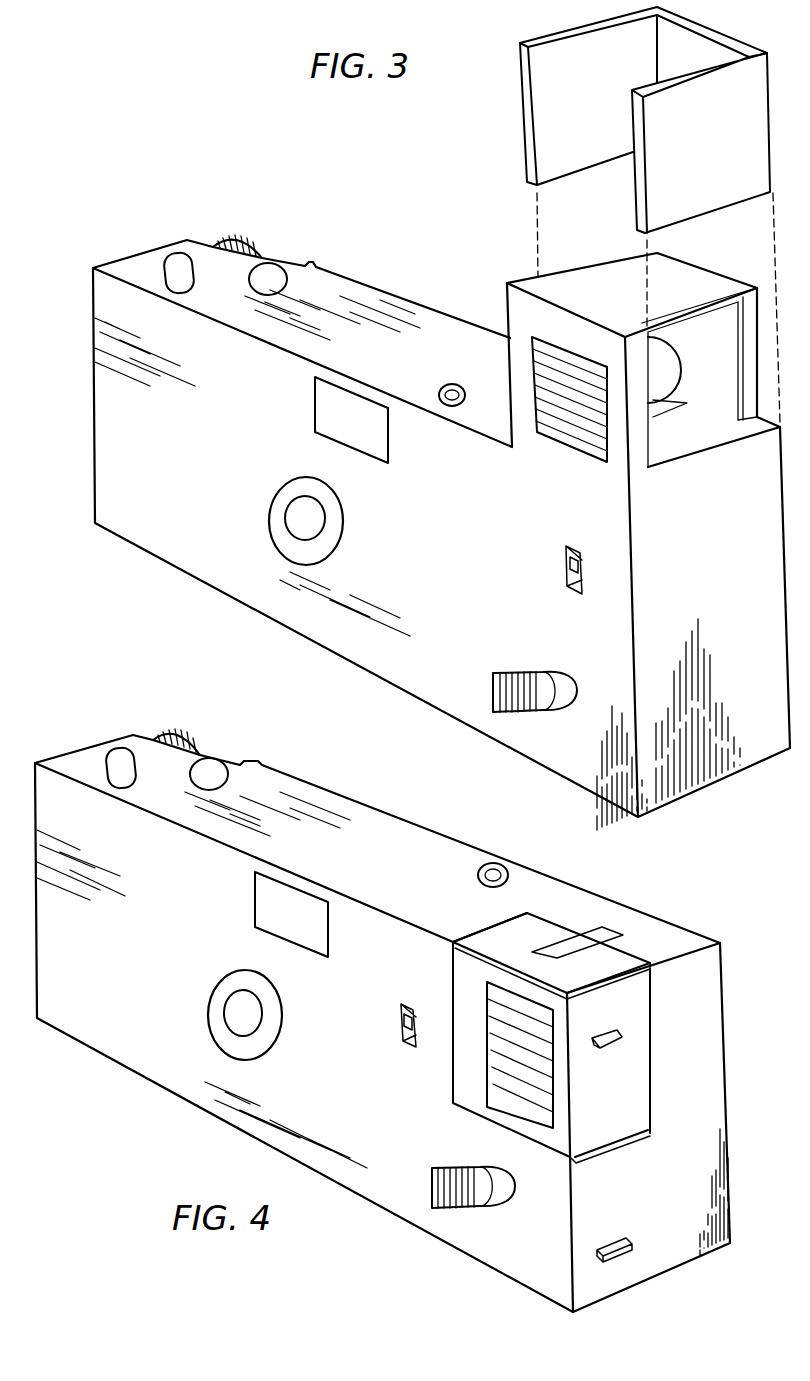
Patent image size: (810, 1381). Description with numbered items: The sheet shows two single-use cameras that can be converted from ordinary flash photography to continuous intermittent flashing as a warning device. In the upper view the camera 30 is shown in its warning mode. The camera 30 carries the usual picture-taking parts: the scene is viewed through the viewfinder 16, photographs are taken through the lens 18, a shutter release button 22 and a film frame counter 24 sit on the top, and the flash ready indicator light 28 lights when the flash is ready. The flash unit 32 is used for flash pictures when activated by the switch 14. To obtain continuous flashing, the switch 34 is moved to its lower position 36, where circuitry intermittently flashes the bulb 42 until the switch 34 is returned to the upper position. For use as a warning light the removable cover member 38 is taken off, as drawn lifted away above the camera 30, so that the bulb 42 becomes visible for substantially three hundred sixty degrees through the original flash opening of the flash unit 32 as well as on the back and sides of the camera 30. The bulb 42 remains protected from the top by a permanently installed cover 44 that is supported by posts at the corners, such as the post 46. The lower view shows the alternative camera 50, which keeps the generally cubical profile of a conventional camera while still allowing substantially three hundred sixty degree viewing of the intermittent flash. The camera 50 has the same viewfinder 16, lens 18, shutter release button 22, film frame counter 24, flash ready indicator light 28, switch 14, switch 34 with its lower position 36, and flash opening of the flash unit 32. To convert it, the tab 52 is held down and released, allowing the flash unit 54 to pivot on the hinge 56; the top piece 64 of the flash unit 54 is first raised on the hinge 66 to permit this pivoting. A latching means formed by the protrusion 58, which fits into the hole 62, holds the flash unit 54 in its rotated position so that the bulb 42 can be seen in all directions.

In FIG. 3, the switch 14 is at (518, 713).
In FIG. 4, the switch 14 is at (462, 1208).
In FIG. 3, the viewfinder 16 is at (232, 240).
In FIG. 4, the viewfinder 16 is at (183, 737).
In FIG. 3, the lens 18 is at (293, 538).
In FIG. 4, the lens 18 is at (233, 1035).
In FIG. 3, the shutter release button 22 is at (177, 257).
In FIG. 4, the shutter release button 22 is at (118, 753).
In FIG. 3, the film frame counter 24 is at (272, 273).
In FIG. 4, the film frame counter 24 is at (217, 770).
In FIG. 3, the flash ready indicator light 28 is at (450, 383).
In FIG. 4, the flash ready indicator light 28 is at (500, 865).
In FIG. 3, the single-use camera 30 is at (289, 214).
In FIG. 3, the flash unit 32 is at (573, 440).
In FIG. 4, the flash unit 32 is at (487, 1065).
In FIG. 3, the switch 34 is at (596, 538).
In FIG. 4, the switch 34 is at (412, 1008).
In FIG. 3, the lower position 36 is at (573, 593).
In FIG. 4, the lower position 36 is at (408, 1050).
In FIG. 3, the removable cover member 38 is at (712, 155).
In FIG. 3, the bulb 42 is at (658, 367).
In FIG. 3, the permanently installed cover 44 is at (595, 282).
In FIG. 3, the post 46 is at (752, 377).
In FIG. 4, the camera 50 is at (120, 1148).
In FIG. 4, the tab 52 is at (592, 930).
In FIG. 4, the flash unit 54 is at (638, 1093).
In FIG. 4, the hinge 56 is at (622, 1145).
In FIG. 4, the protrusion 58 is at (623, 1258).
In FIG. 4, the hole 62 is at (620, 1043).
In FIG. 4, the top piece 64 is at (613, 960).
In FIG. 4, the hinge 66 is at (482, 932).